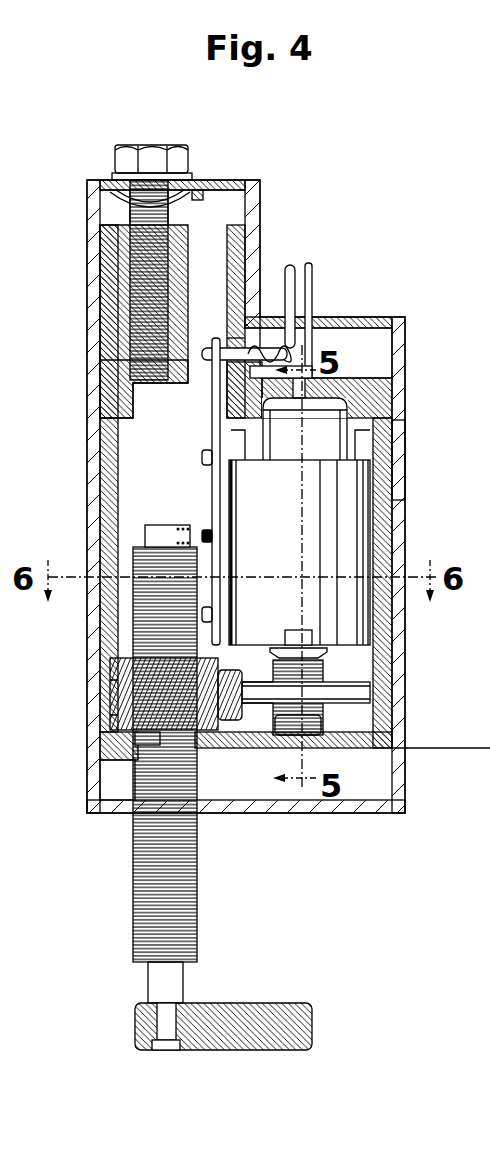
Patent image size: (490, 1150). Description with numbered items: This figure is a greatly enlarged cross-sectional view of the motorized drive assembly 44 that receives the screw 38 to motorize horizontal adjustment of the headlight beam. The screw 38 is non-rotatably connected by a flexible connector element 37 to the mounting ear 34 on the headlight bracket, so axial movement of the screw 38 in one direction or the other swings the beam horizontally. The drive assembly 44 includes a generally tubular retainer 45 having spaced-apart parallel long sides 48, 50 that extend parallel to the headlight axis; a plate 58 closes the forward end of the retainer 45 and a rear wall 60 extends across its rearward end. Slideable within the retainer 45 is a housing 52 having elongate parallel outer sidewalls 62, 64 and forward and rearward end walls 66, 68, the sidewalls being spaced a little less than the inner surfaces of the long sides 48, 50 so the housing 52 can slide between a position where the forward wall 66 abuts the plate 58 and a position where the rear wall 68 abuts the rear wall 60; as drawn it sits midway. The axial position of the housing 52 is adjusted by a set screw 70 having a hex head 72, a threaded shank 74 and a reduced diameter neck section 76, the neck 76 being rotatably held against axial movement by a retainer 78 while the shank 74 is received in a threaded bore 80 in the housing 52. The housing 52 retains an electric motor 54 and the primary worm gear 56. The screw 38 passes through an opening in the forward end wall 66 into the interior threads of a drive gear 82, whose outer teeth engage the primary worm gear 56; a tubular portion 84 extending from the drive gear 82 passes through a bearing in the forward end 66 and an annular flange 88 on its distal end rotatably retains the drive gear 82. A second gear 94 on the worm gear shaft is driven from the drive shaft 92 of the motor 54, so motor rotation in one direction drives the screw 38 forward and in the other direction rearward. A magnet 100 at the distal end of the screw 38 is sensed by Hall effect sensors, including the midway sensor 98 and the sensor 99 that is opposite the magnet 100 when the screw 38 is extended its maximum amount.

The mounting ear 34 is at (312, 1027).
The flexible connector element 37 is at (183, 990).
The screw 38 is at (200, 878).
The motorized drive assembly 44 is at (410, 351).
The tubular retainer 45 is at (325, 327).
The long side 48 is at (408, 475).
The long side 50 is at (92, 797).
The housing 52 is at (398, 615).
The electric motor 54 is at (347, 545).
The primary worm gear 56 is at (250, 735).
The plate 58 is at (342, 814).
The rear wall 60 is at (232, 182).
The outer sidewall 62 is at (330, 660).
The outer sidewall 64 is at (118, 410).
The forward end wall 66 is at (345, 748).
The rearward end wall 68 is at (222, 226).
The set screw 70 is at (147, 238).
The hex head 72 is at (117, 156).
The threaded shank 74 is at (150, 307).
The reduced diameter neck section 76 is at (132, 188).
The retainer 78 is at (175, 190).
The threaded bore 80 is at (120, 385).
The drive gear 82 is at (232, 732).
The tubular portion 84 is at (130, 722).
The annular flange 88 is at (130, 758).
The drive shaft 92 is at (370, 690).
The second gear 94 is at (322, 714).
The Hall effect sensor 98 is at (205, 530).
The Hall effect sensor 99 is at (203, 460).
The magnet 100 is at (182, 527).